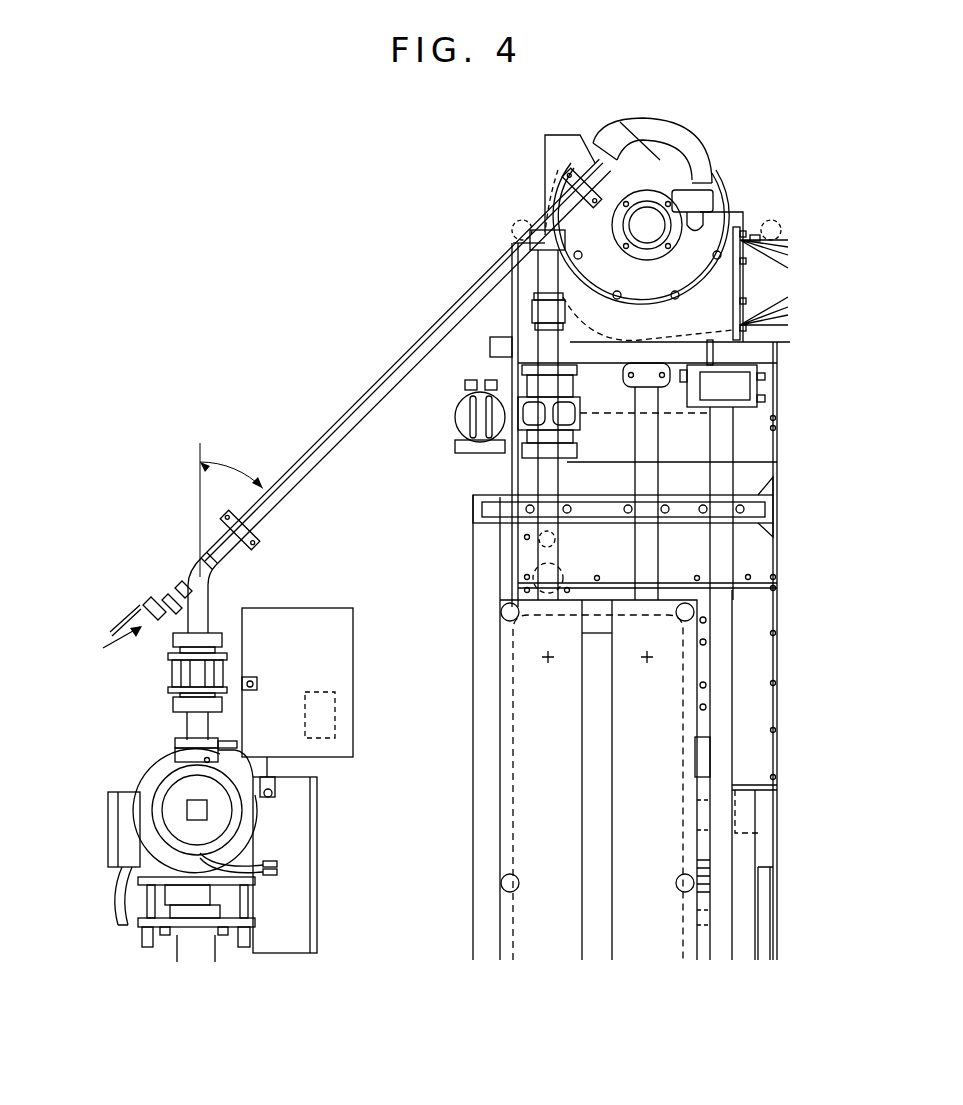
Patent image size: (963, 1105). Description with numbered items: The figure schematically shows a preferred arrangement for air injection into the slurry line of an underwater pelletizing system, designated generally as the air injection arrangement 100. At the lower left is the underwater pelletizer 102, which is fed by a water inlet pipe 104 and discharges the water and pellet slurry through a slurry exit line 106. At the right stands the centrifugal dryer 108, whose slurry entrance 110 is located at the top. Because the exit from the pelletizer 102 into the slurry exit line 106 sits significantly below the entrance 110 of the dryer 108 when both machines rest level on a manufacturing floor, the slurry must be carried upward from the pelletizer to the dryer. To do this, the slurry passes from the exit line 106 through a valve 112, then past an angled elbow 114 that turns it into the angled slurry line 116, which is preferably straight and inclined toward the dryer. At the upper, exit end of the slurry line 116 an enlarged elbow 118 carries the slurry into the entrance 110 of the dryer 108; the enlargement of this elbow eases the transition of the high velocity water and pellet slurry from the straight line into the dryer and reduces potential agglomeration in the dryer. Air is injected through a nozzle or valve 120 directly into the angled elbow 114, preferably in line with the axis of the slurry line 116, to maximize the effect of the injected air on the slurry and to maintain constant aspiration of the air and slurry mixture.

The air injection arrangement 100 is at (352, 343).
The underwater pelletizer 102 is at (150, 785).
The water inlet pipe 104 is at (208, 950).
The slurry exit line 106 is at (190, 722).
The dryer 108 is at (765, 660).
The slurry entrance 110 is at (716, 208).
The valve 112 is at (215, 668).
The angled elbow 114 is at (195, 568).
The angled slurry line 116 is at (360, 398).
The enlarged elbow 118 is at (650, 128).
The air injection nozzle or valve 120 is at (155, 605).